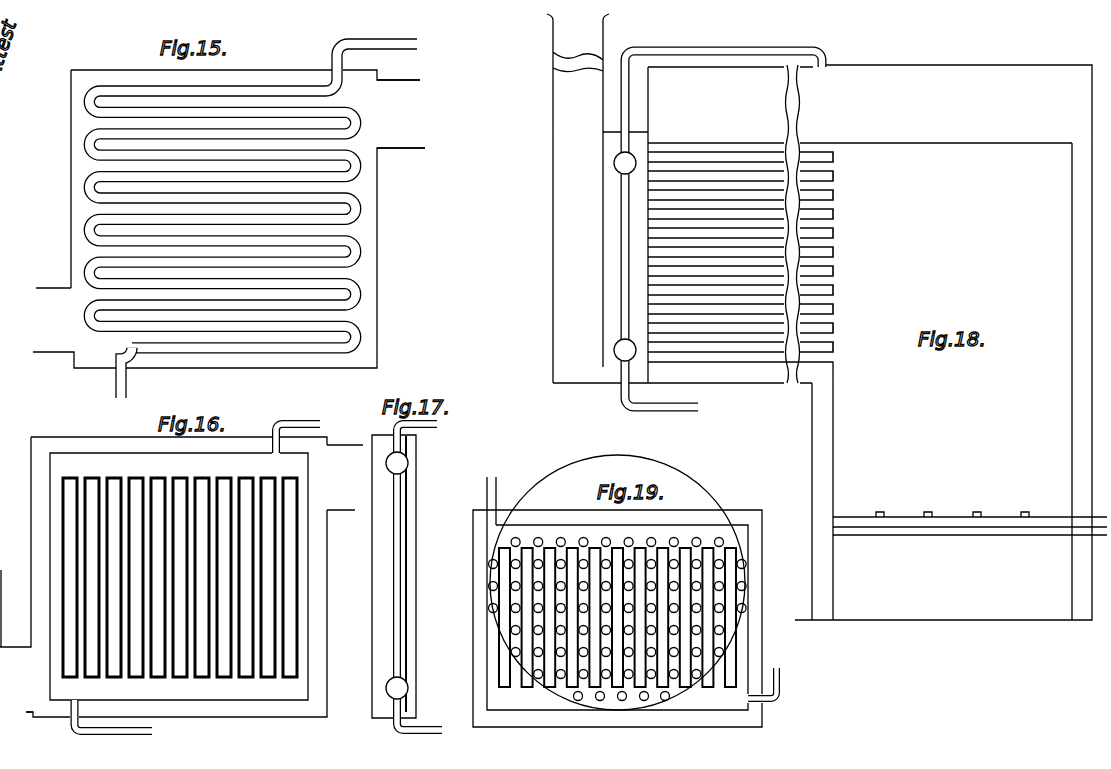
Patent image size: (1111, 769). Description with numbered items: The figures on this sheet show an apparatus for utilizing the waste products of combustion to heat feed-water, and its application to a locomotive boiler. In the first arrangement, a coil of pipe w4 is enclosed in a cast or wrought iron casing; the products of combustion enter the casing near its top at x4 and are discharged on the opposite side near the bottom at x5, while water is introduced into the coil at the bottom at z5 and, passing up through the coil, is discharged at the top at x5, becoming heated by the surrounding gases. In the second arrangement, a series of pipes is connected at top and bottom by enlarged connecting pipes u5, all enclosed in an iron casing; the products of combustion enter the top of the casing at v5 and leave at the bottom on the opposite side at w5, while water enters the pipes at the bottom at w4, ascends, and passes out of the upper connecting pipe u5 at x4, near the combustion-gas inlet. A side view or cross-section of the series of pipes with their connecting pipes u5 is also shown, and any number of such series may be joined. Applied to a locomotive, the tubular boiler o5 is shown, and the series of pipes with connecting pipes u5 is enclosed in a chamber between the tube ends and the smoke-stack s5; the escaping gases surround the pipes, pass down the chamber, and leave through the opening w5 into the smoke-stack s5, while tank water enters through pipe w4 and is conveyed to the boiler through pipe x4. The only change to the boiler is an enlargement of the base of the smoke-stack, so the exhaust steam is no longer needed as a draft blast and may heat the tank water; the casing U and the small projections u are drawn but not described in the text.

In FIG. 15, the coil discharge outlet x5 is at (235, 203).
In FIG. 15, the casing inlet / water discharge pipe x4 is at (401, 106).
In FIG. 16, the casing inlet / water discharge pipe x4 is at (308, 433).
In FIG. 17, the casing inlet / water discharge pipe x4 is at (427, 425).
In FIG. 18, the casing inlet / water discharge pipe x4 is at (723, 97).
In FIG. 19, the casing inlet / water discharge pipe x4 is at (493, 491).
In FIG. 15, the coil of pipe / water inlet pipe w4 is at (222, 219).
In FIG. 16, the coil of pipe / water inlet pipe w4 is at (125, 722).
In FIG. 17, the coil of pipe / water inlet pipe w4 is at (419, 737).
In FIG. 18, the coil of pipe / water inlet pipe w4 is at (673, 383).
In FIG. 19, the coil of pipe / water inlet pipe w4 is at (775, 683).
In FIG. 15, the coil water inlet z5 is at (133, 373).
In FIG. 16, the connecting pipes u5 is at (180, 573).
In FIG. 17, the connecting pipes u5 is at (391, 574).
In FIG. 18, the connecting pipes u5 is at (617, 256).
In FIG. 19, the connecting pipes u5 is at (617, 630).
In FIG. 16, the products-of-combustion inlet v5 is at (266, 518).
In FIG. 19, the products-of-combustion inlet v5 is at (618, 619).
In FIG. 16, the products-of-combustion outlet opening w5 is at (18, 716).
In FIG. 17, the products-of-combustion outlet opening w5 is at (397, 579).
In FIG. 18, the products-of-combustion outlet opening w5 is at (601, 268).
In FIG. 18, the smoke-stack s5 is at (661, 198).
In FIG. 18, the locomotive tubular boiler o5 is at (740, 252).
In FIG. 18, the casing U is at (870, 342).
In FIG. 18, the grate bumps u is at (970, 515).